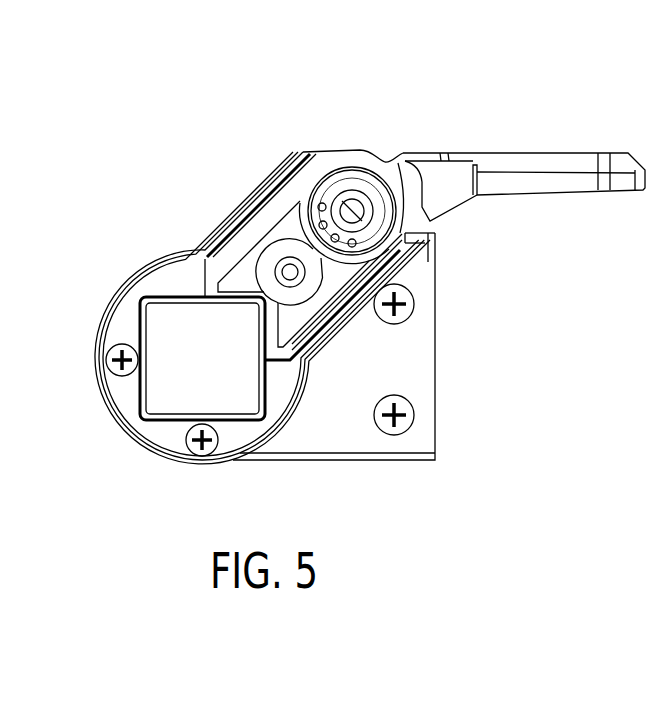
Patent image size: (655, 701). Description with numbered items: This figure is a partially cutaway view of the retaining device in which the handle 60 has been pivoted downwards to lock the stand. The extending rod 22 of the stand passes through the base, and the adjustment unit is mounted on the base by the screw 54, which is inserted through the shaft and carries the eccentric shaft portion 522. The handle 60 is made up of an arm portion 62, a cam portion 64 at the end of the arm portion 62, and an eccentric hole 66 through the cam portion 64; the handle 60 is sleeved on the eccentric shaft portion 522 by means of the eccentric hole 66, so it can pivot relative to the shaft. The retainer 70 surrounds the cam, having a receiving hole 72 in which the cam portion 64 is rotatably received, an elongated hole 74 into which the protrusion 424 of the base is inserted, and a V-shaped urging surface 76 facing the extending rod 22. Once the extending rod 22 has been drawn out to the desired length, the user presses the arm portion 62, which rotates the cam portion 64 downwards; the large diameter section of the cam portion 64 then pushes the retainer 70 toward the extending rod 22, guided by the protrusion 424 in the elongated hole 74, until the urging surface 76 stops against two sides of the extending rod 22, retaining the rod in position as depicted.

The extending rod 22 is at (167, 341).
The screw 54 is at (362, 214).
The handle 60 is at (587, 130).
The arm portion 62 is at (525, 160).
The cam portion 64 is at (305, 183).
The eccentric hole 66 is at (415, 195).
The retainer 70 is at (338, 127).
The receiving hole 72 is at (392, 180).
The elongated hole 74 is at (225, 297).
The V-shaped urging surface 76 is at (203, 250).
The protrusion 424 is at (269, 266).
The eccentric shaft portion 522 is at (347, 228).